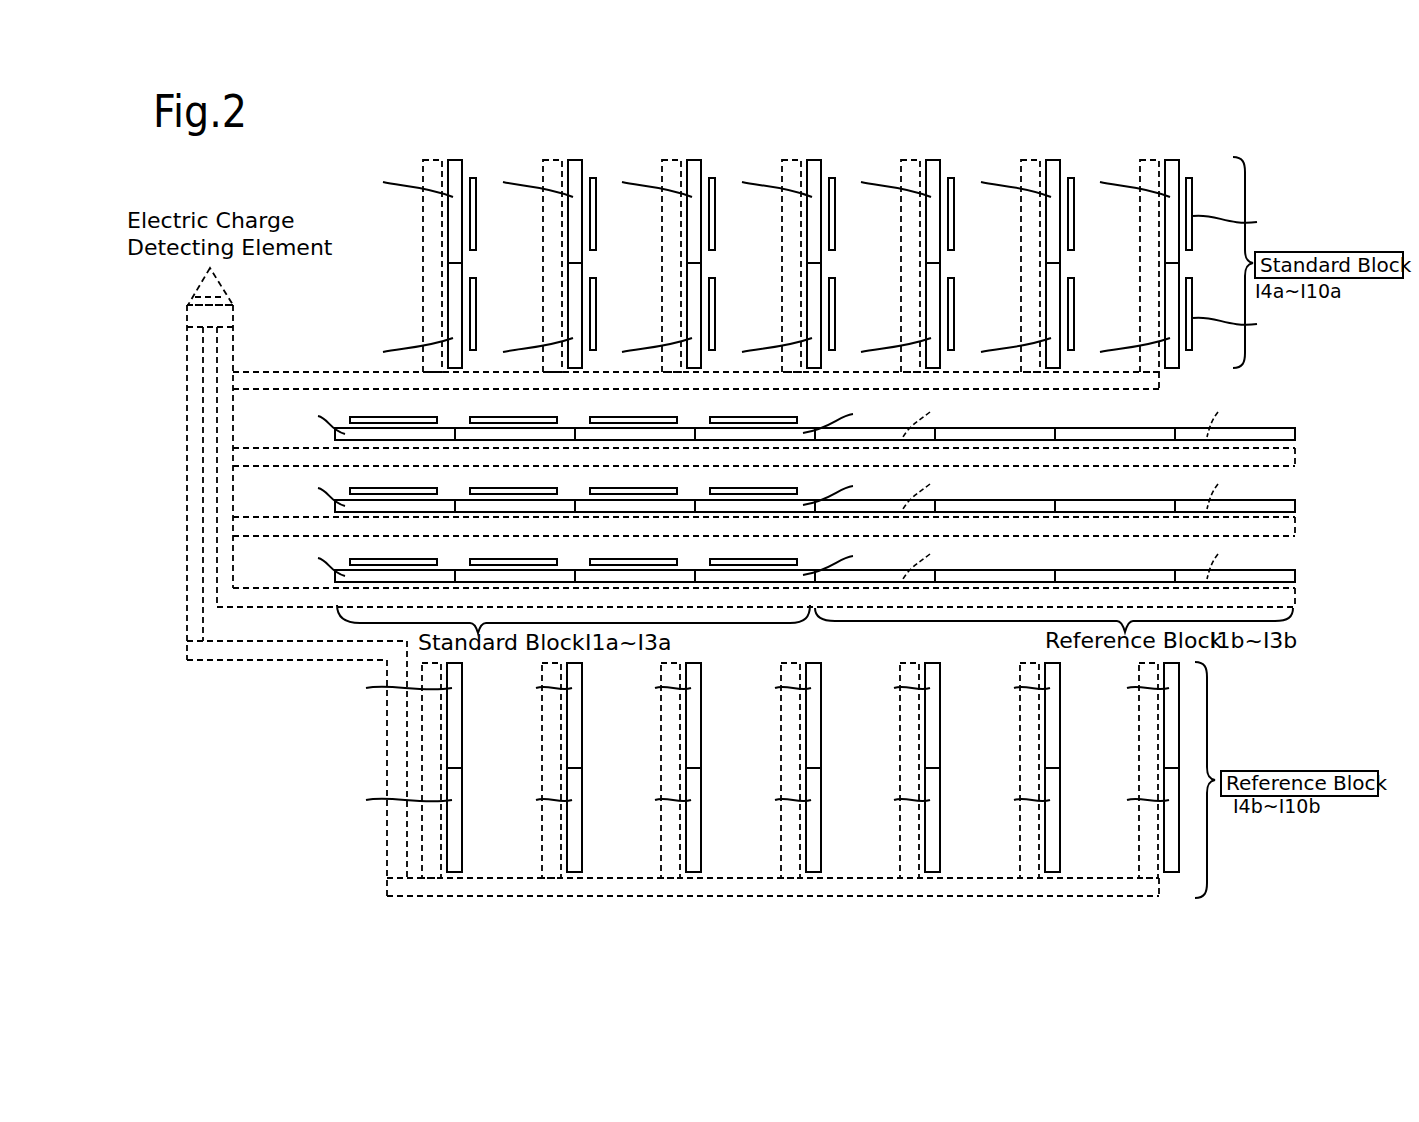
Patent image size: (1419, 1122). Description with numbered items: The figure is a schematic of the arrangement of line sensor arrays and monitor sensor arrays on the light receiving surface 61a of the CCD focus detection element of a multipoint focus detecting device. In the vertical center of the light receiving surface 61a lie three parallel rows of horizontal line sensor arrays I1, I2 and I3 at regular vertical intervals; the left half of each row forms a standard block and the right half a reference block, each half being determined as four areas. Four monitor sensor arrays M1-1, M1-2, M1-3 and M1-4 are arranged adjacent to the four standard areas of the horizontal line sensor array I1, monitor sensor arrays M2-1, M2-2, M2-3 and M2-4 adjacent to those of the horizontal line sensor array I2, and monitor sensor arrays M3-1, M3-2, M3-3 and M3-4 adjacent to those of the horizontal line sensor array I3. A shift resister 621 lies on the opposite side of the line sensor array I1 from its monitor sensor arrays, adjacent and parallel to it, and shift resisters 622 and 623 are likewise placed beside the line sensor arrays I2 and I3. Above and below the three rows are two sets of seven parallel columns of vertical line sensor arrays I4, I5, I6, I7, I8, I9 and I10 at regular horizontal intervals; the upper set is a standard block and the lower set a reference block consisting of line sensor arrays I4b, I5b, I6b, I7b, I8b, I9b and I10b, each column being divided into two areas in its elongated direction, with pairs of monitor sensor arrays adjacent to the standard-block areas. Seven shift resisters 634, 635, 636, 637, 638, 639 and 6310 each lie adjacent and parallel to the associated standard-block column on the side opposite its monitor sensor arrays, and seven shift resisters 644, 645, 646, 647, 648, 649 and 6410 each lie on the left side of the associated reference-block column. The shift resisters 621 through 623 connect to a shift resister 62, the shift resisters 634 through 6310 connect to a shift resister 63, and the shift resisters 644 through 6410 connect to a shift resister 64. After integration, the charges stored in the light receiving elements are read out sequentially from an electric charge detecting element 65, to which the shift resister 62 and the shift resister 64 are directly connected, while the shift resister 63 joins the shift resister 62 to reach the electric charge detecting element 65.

The light receiving surface 61a is at (772, 143).
The shift resister 62 is at (203, 490).
The shift resister 63 is at (305, 372).
The shift resister 64 is at (200, 386).
The electric charge detecting element 65 is at (205, 293).
The shift resister 621 is at (1297, 457).
The shift resister 622 is at (1297, 526).
The shift resister 623 is at (1297, 598).
The shift resister 634 is at (435, 265).
The shift resister 635 is at (555, 265).
The shift resister 636 is at (674, 265).
The shift resister 637 is at (794, 265).
The shift resister 638 is at (913, 265).
The shift resister 639 is at (1033, 265).
The shift resister 6310 is at (1152, 265).
The shift resister 644 is at (434, 752).
The shift resister 645 is at (554, 752).
The shift resister 646 is at (673, 752).
The shift resister 647 is at (793, 752).
The shift resister 648 is at (912, 752).
The shift resister 649 is at (1032, 752).
The shift resister 6410 is at (1151, 752).
The horizontal line sensor array I1 is at (335, 436).
The horizontal line sensor array I2 is at (335, 508).
The horizontal line sensor array I3 is at (335, 578).
The vertical line sensor array I4 is at (456, 160).
The vertical line sensor array I5 is at (576, 160).
The vertical line sensor array I6 is at (695, 160).
The vertical line sensor array I7 is at (815, 160).
The vertical line sensor array I8 is at (934, 160).
The vertical line sensor array I9 is at (1054, 160).
The vertical line sensor array I10 is at (1173, 160).
The reference block line sensor array I4b is at (396, 804).
The reference block line sensor array I5b is at (533, 793).
The reference block line sensor array I6b is at (652, 793).
The reference block line sensor array I7b is at (772, 793).
The reference block line sensor array I8b is at (891, 793).
The reference block line sensor array I9b is at (1011, 793).
The reference block line sensor array I10b is at (1124, 804).
The monitor sensor array M1-1 is at (393, 407).
The monitor sensor array M1-2 is at (513, 407).
The monitor sensor array M1-3 is at (633, 407).
The monitor sensor array M1-4 is at (753, 407).
The monitor sensor array M2-1 is at (393, 479).
The monitor sensor array M2-2 is at (513, 479).
The monitor sensor array M2-3 is at (633, 479).
The monitor sensor array M2-4 is at (753, 479).
The monitor sensor array M3-1 is at (393, 549).
The monitor sensor array M3-2 is at (513, 549).
The monitor sensor array M3-3 is at (633, 549).
The monitor sensor array M3-4 is at (753, 549).